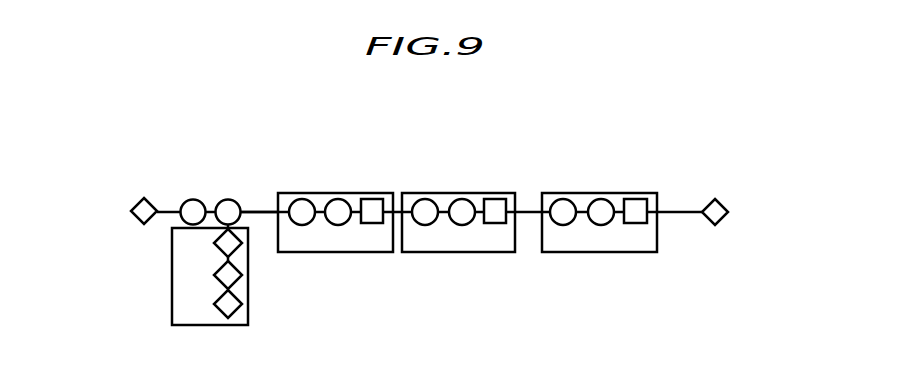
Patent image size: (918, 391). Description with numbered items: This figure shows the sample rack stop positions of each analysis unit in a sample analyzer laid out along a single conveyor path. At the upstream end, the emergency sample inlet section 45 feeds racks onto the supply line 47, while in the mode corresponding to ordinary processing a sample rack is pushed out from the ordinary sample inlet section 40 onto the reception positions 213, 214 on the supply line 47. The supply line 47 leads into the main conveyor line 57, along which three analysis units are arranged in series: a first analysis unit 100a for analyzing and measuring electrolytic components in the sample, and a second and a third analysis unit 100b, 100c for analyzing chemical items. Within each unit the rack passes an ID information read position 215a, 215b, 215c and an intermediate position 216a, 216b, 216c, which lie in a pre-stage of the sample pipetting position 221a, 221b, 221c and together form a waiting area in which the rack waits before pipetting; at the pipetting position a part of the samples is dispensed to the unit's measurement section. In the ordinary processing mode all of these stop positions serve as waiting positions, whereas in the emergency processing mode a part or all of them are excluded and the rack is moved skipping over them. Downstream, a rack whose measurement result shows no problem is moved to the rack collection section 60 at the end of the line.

The ordinary sample inlet section 40 is at (197, 326).
The emergency sample inlet section 45 is at (140, 200).
The supply line 47 is at (169, 211).
The main conveyor line 57 is at (260, 211).
The rack collection section 60 is at (723, 221).
The reception position 213 is at (196, 200).
The reception position 214 is at (229, 200).
The first analysis unit 100a is at (343, 193).
The second analysis unit 100b is at (467, 193).
The third analysis unit 100c is at (609, 193).
The ID information read position 215a is at (302, 225).
The ID information read position 215b is at (425, 225).
The ID information read position 215c is at (563, 225).
The intermediate position 216a is at (339, 225).
The intermediate position 216b is at (463, 225).
The intermediate position 216c is at (602, 225).
The sample pipetting position 221a is at (373, 199).
The sample pipetting position 221b is at (497, 199).
The sample pipetting position 221c is at (636, 199).